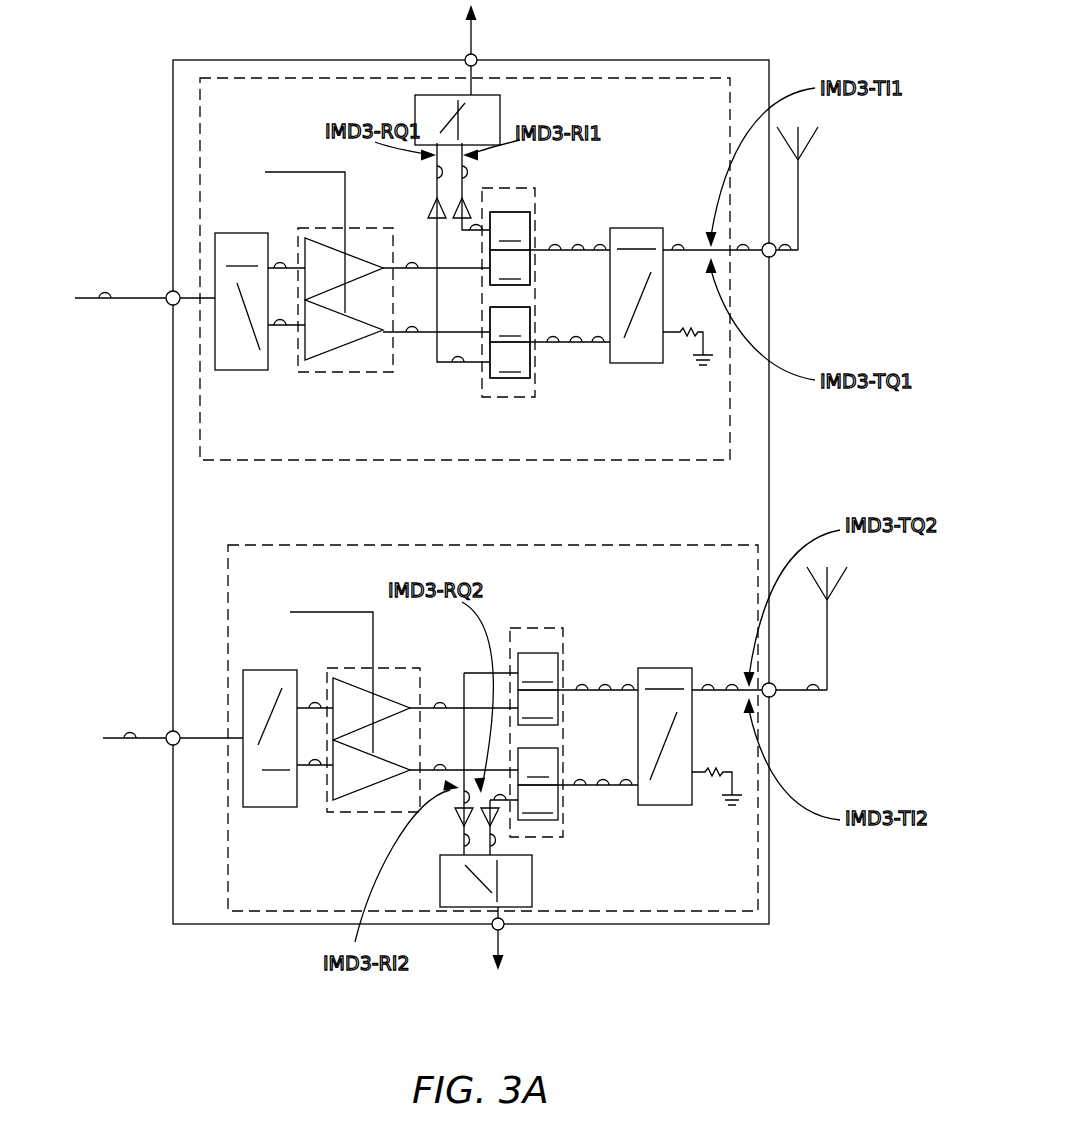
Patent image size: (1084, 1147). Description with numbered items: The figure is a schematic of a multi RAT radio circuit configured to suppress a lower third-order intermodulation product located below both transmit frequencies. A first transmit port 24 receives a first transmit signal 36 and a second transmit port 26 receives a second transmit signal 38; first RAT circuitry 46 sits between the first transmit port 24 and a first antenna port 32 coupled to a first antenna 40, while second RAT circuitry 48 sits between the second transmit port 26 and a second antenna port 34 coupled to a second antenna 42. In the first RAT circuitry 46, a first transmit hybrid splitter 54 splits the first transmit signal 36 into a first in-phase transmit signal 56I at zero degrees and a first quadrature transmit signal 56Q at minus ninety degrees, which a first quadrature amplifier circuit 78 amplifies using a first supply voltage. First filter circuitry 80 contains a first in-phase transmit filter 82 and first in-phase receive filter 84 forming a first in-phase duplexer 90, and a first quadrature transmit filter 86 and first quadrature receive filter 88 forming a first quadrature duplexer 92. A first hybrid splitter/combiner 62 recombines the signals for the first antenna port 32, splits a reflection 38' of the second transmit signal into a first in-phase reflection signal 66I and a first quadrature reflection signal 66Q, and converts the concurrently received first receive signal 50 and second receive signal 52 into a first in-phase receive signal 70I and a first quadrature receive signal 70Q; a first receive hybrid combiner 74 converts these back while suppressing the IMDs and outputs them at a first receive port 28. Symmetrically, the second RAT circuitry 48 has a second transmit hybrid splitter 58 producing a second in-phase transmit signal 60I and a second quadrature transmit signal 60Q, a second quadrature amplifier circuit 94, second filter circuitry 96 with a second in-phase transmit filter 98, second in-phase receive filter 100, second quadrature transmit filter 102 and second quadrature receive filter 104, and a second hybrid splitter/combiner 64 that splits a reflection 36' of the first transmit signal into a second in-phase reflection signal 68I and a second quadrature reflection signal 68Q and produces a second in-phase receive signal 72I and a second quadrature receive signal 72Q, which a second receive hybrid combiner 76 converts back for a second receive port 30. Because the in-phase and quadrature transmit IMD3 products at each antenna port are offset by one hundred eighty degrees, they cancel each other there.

The first transmit port 24 is at (166, 292).
The second transmit port 26 is at (166, 732).
The first receive port 28 is at (478, 56).
The second receive port 30 is at (505, 932).
The first antenna port 32 is at (763, 245).
The second antenna port 34 is at (771, 697).
The first transmit signal 36 is at (392, 277).
The reflection of the first transmit signal 36' is at (737, 718).
The second transmit signal 38 is at (421, 724).
The reflection of the second transmit signal 38' is at (746, 276).
The first antenna 40 is at (808, 140).
The second antenna 42 is at (838, 583).
The first RAT circuitry 46 is at (246, 449).
The second RAT circuitry 48 is at (276, 576).
The first receive signal 50 is at (790, 243).
The second receive signal 52 is at (787, 258).
The first transmit hybrid splitter 54 is at (240, 371).
The first in-phase transmit signal 56I is at (279, 262).
The first quadrature transmit signal 56Q is at (280, 333).
The second transmit hybrid splitter 58 is at (268, 808).
The second in-phase transmit signal 60I is at (315, 772).
The second quadrature transmit signal 60Q is at (315, 702).
The first hybrid splitter/combiner 62 is at (648, 227).
The second hybrid splitter/combiner 64 is at (680, 668).
The first in-phase reflection signal 66I is at (476, 231).
The first quadrature reflection signal 66Q is at (458, 365).
The second in-phase reflection signal 68I is at (462, 802).
The second quadrature reflection signal 68Q is at (499, 794).
The first in-phase receive signal 70I is at (469, 172).
The first quadrature receive signal 70Q is at (430, 173).
The second in-phase receive signal 72I is at (463, 843).
The second quadrature receive signal 72Q is at (493, 840).
The first receive hybrid combiner 74 is at (500, 112).
The second receive hybrid combiner 76 is at (532, 890).
The first quadrature amplifier circuit 78 is at (388, 372).
The first filter circuitry 80 is at (500, 397).
The first in-phase transmit filter 82 is at (510, 267).
The first in-phase receive filter 84 is at (510, 231).
The first quadrature transmit filter 86 is at (510, 324).
The first quadrature receive filter 88 is at (510, 360).
The first in-phase duplexer 90 is at (526, 210).
The first quadrature duplexer 92 is at (522, 381).
The second quadrature amplifier circuit 94 is at (425, 668).
The second filter circuitry 96 is at (535, 627).
The second in-phase transmit filter 98 is at (538, 766).
The second in-phase receive filter 100 is at (538, 671).
The second quadrature transmit filter 102 is at (538, 707).
The second quadrature receive filter 104 is at (538, 802).